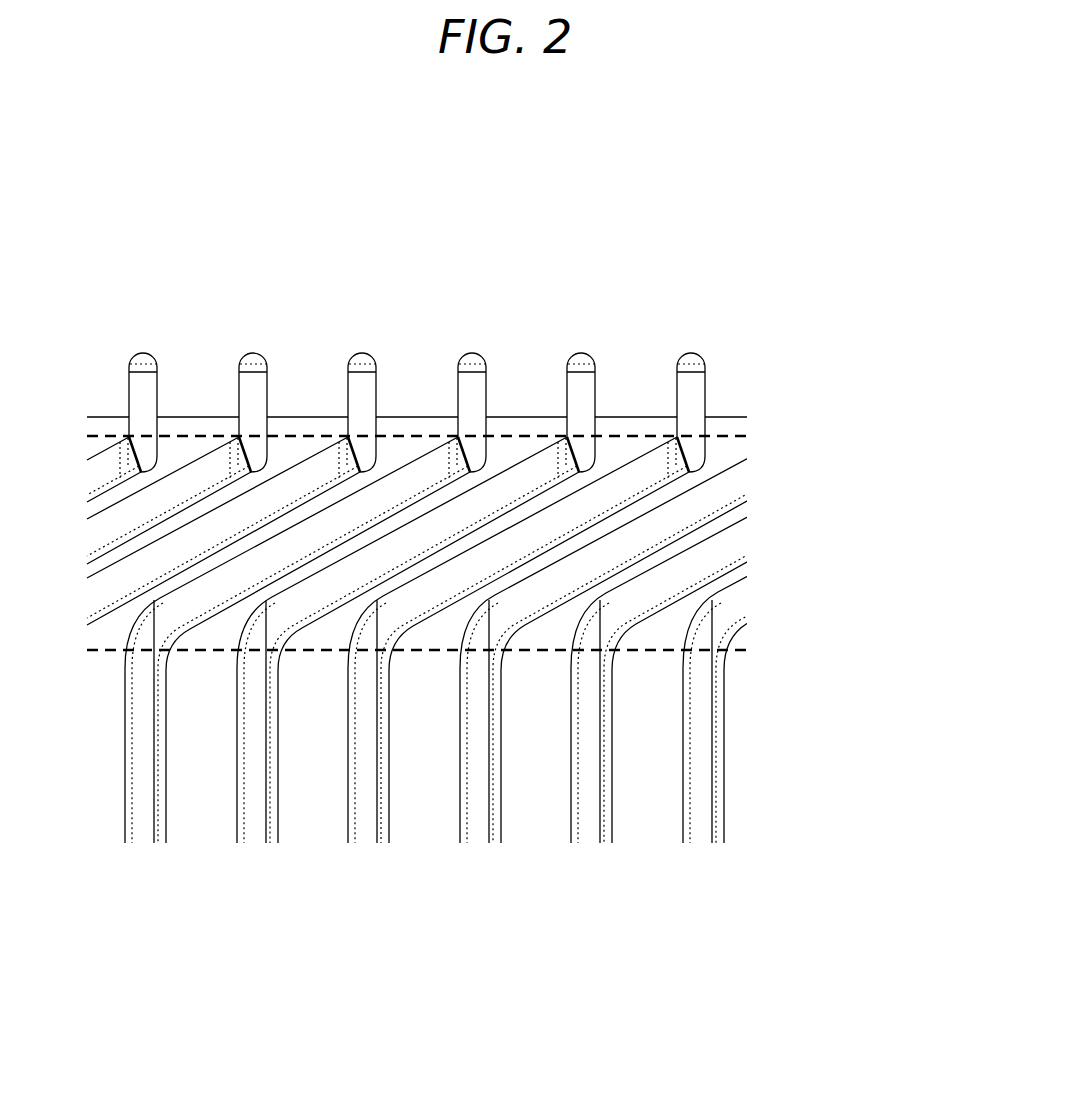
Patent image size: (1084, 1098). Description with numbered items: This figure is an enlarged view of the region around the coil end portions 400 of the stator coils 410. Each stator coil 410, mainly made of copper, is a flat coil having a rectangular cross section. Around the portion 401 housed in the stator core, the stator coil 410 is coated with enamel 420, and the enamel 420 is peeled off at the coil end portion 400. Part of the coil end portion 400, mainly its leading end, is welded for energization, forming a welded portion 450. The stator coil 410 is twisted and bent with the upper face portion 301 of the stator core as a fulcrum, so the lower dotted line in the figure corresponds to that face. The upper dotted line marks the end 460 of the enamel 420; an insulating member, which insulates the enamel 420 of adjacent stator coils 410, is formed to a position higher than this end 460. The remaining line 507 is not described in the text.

The coil end portion 400 is at (466, 392).
The welded portion 450 is at (250, 356).
The end of the enamel 460 is at (624, 430).
The housing surface 507 is at (478, 362).
The portion housed in the stator core 401 is at (703, 640).
The stator coil 410 is at (140, 698).
The upper face portion of the stator core 301 is at (442, 656).
The enamel 420 is at (560, 604).